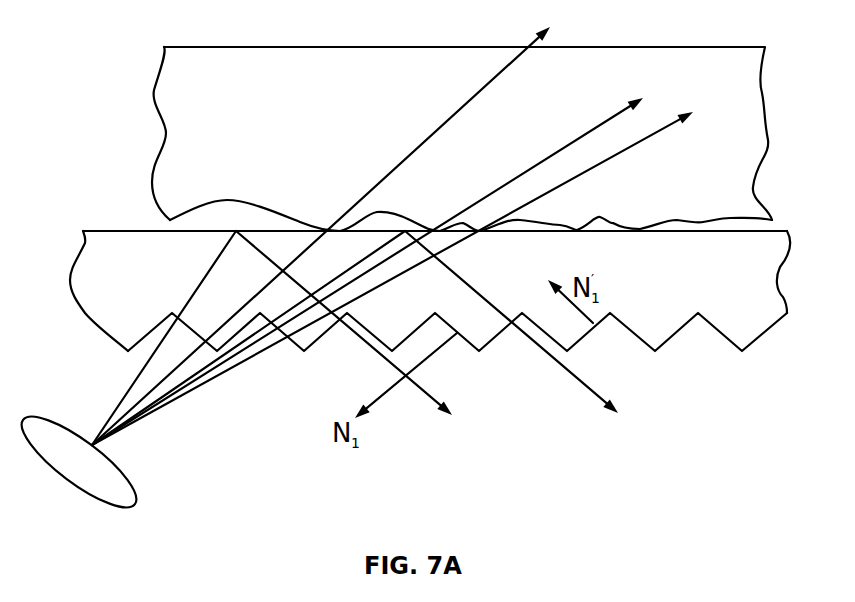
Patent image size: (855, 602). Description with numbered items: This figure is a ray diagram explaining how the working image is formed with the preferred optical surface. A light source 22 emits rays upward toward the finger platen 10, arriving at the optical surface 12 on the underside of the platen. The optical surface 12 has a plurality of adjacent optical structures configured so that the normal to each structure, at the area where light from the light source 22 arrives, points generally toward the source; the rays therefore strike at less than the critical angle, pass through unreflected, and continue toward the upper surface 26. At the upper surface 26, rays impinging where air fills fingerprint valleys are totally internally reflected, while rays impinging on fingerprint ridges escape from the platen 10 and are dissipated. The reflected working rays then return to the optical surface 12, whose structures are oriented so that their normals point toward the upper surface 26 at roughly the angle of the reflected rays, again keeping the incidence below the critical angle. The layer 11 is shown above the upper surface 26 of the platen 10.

The finger platen 10 is at (765, 285).
The upper layer / finger contact layer 11 is at (743, 172).
The optical surface 12 is at (739, 366).
The light source 22 is at (79, 486).
The upper surface 26 is at (783, 221).